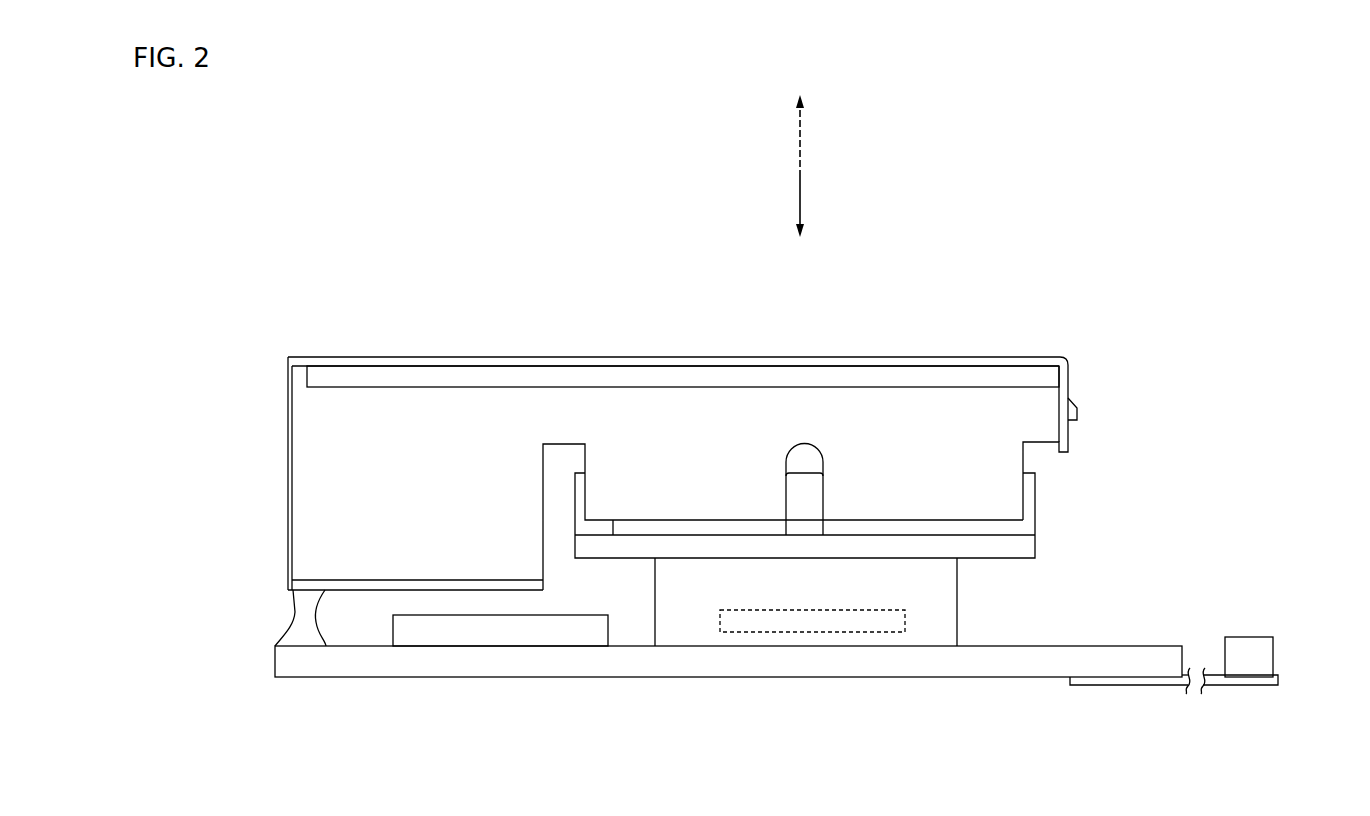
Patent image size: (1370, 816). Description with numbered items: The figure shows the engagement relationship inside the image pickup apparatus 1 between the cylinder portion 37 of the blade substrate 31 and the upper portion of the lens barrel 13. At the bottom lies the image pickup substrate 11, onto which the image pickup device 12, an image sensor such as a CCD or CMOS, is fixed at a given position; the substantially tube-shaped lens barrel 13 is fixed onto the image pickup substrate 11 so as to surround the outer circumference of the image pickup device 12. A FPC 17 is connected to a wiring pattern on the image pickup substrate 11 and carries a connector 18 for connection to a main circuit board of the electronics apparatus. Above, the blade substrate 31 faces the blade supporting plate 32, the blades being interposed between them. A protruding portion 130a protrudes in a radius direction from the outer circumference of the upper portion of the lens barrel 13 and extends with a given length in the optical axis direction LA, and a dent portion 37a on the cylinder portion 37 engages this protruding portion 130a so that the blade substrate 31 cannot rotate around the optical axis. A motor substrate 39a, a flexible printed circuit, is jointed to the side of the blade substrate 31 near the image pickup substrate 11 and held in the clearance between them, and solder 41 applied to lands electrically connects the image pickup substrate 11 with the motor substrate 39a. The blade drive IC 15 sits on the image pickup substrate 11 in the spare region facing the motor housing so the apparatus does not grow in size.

The image pickup apparatus 1 is at (484, 214).
The optical axis direction LA is at (800, 177).
The blade substrate 31 is at (485, 410).
The blade supporting plate 32 is at (592, 358).
The motor substrate 39a is at (297, 590).
The solder 41 is at (307, 628).
The cylinder portion 37 is at (1003, 457).
The dent portion 37a is at (792, 461).
The protruding portion 130a is at (810, 495).
The lens barrel 13 is at (943, 618).
The image pickup device 12 is at (827, 638).
The image pickup substrate 11 is at (595, 665).
The blade drive IC 15 is at (445, 632).
The FPC 17 is at (1158, 678).
The connector 18 is at (1245, 643).